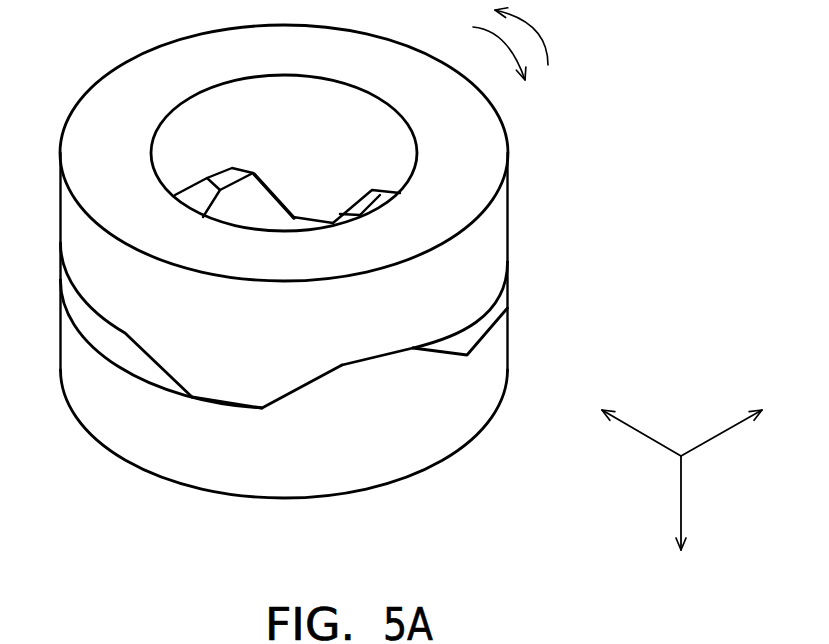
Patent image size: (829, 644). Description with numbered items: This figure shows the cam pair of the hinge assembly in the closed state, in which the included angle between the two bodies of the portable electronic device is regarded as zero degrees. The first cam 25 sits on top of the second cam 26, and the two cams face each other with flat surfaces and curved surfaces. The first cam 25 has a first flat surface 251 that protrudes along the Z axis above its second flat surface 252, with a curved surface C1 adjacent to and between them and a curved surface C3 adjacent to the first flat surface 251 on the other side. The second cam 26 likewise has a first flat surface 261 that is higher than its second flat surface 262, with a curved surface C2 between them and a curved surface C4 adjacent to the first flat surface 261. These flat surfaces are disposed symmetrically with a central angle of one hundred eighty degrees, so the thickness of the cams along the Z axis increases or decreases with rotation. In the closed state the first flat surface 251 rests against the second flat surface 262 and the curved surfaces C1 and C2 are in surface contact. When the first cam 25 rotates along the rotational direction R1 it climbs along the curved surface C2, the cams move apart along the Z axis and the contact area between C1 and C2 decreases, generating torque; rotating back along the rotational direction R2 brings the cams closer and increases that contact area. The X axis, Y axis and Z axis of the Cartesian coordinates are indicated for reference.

The first cam 25 is at (518, 218).
The second cam 26 is at (518, 335).
The first flat surface 251 is at (207, 401).
The second flat surface 252 is at (387, 355).
The first flat surface 261 is at (395, 352).
The second flat surface 262 is at (250, 405).
The curved surface C1 is at (313, 382).
The curved surface C2 is at (323, 376).
The curved surface C3 is at (155, 366).
The curved surface C4 is at (445, 352).
The rotational direction R1 is at (528, 37).
The rotational direction R2 is at (499, 53).
The X axis X is at (632, 424).
The Y axis Y is at (731, 424).
The Z axis Z is at (679, 521).